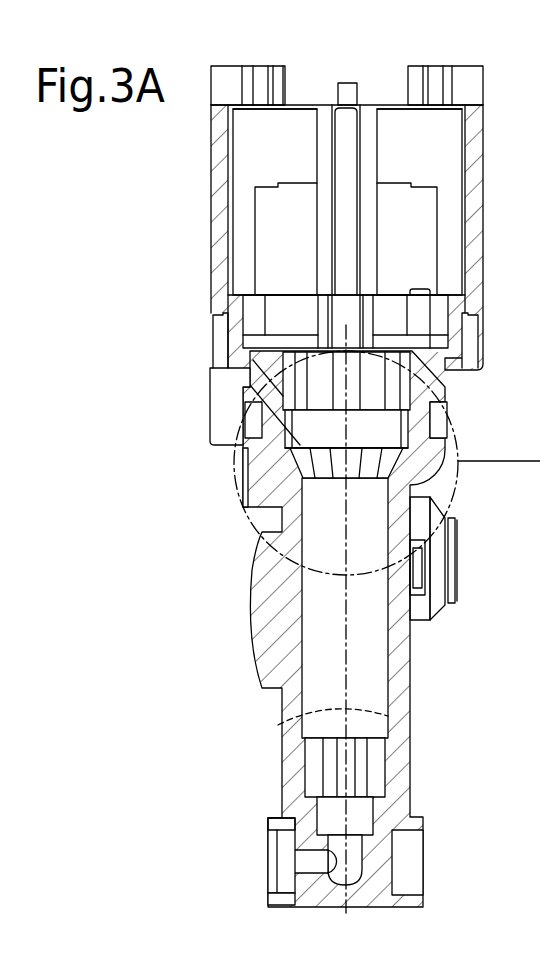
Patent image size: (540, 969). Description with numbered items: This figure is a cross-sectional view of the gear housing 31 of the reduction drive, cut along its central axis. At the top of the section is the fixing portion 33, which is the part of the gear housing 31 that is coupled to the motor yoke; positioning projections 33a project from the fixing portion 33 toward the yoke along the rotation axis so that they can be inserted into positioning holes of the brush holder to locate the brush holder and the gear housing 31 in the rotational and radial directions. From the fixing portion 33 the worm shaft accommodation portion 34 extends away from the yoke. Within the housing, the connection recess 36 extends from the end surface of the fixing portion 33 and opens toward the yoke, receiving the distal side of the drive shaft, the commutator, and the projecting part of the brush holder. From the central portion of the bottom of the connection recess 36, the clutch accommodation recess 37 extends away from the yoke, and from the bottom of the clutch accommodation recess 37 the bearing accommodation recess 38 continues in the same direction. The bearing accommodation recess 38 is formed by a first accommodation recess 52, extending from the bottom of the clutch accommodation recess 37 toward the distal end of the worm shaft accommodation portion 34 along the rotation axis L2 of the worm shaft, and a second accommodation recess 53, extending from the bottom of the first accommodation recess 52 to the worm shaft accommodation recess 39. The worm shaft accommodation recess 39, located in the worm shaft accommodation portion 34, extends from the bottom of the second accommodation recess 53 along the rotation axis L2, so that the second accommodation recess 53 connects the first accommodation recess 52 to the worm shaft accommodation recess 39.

The gear housing 31 is at (480, 208).
The fixing portion 33 is at (478, 122).
The positioning projection 33a is at (345, 90).
The worm shaft accommodation portion 34 is at (402, 707).
The connection recess 36 is at (457, 181).
The clutch accommodation recess 37 is at (432, 384).
The bearing accommodation recess 38 is at (413, 428).
The worm shaft accommodation recess 39 is at (395, 652).
The first accommodation recess 52 is at (285, 420).
The second accommodation recess 53 is at (297, 465).
The rotation axis of the worm shaft L2 is at (272, 720).